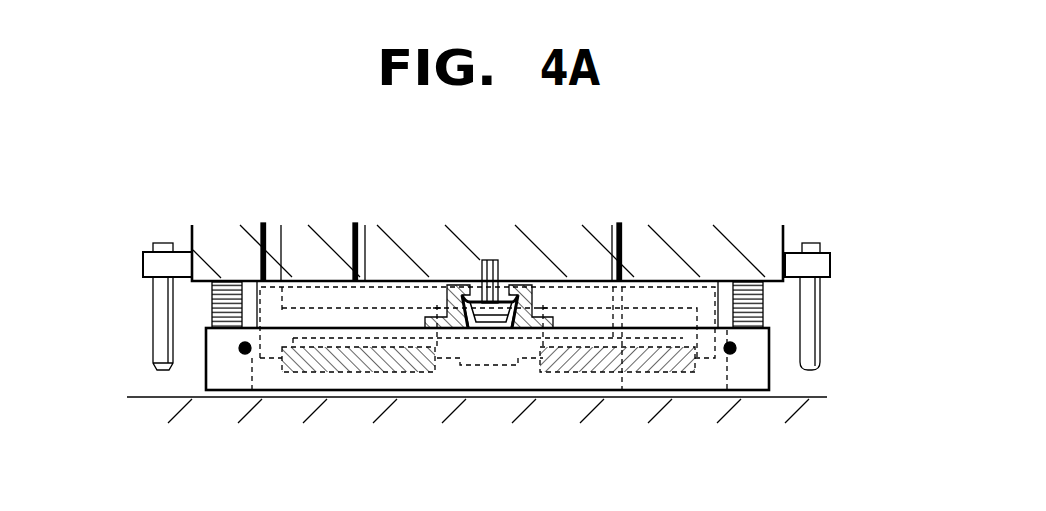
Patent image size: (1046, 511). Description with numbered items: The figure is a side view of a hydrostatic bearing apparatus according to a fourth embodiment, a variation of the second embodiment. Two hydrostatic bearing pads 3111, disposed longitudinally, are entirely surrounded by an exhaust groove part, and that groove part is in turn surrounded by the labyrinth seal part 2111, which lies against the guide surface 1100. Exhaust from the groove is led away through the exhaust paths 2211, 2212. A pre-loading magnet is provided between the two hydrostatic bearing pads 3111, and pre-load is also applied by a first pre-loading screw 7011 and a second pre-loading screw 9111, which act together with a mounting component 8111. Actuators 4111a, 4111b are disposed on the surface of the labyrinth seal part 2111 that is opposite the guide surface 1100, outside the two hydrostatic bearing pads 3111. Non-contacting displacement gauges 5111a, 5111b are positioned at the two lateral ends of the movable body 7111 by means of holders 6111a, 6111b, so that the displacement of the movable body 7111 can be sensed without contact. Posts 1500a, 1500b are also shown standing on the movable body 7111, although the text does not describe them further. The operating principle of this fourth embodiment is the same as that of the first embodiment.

The guide surface 1100 is at (157, 397).
The labyrinth seal part 2111 is at (237, 397).
The exhaust path 2211 is at (318, 287).
The exhaust path 2212 is at (268, 230).
The hydrostatic bearing pad 3111 is at (355, 373).
The actuator 4111a is at (763, 302).
The actuator 4111b is at (212, 300).
The non-contacting displacement gauge 5111a is at (810, 243).
The non-contacting displacement gauge 5111b is at (163, 243).
The holder 6111a is at (832, 255).
The holder 6111b is at (140, 250).
The first pre-loading screw 7011 is at (452, 285).
The movable body 7111 is at (720, 262).
The mounting component 8111 is at (535, 285).
The second pre-loading screw 9111 is at (484, 260).
The support post 1500a is at (613, 225).
The support post 1500b is at (358, 225).